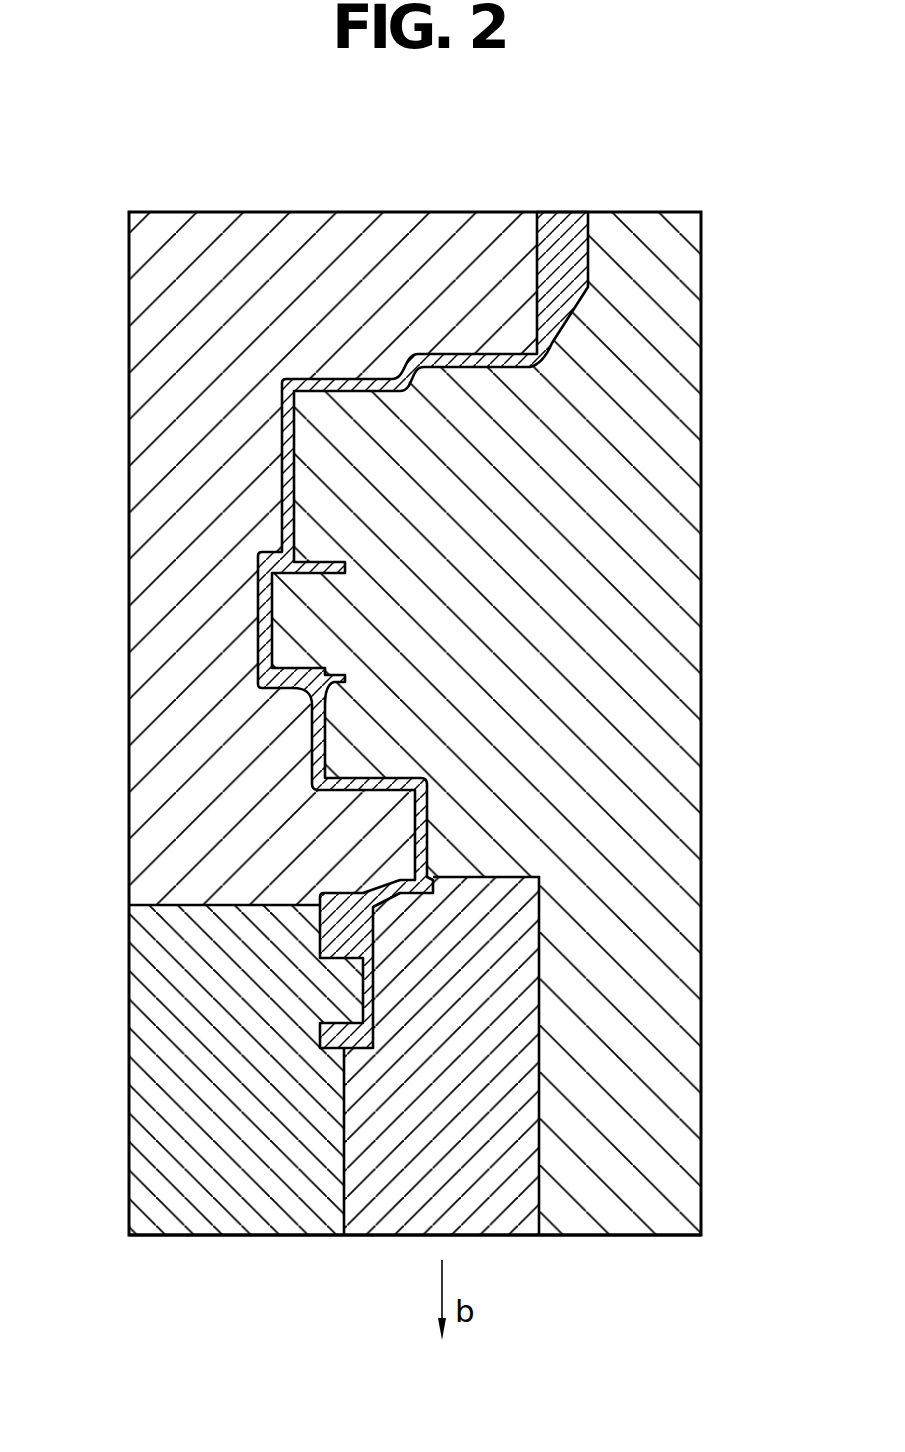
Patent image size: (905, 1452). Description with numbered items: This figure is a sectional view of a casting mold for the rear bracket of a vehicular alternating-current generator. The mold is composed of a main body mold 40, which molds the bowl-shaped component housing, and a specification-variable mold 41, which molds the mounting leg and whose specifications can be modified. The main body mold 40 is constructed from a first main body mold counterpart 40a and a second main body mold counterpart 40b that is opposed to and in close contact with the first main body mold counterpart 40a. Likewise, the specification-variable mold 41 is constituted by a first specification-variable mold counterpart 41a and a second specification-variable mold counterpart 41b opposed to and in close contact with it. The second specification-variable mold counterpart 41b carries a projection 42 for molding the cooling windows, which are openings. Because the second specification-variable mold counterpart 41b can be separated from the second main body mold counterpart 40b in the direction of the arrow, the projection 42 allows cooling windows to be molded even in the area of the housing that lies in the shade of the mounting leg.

The main body mold 40 is at (415, 670).
The first main body mold counterpart 40a is at (307, 235).
The second main body mold counterpart 40b is at (641, 237).
The specification-variable mold 41 is at (370, 1107).
The first specification-variable mold counterpart 41a is at (193, 1108).
The second specification-variable mold counterpart 41b is at (395, 1185).
The projection 42 is at (478, 880).